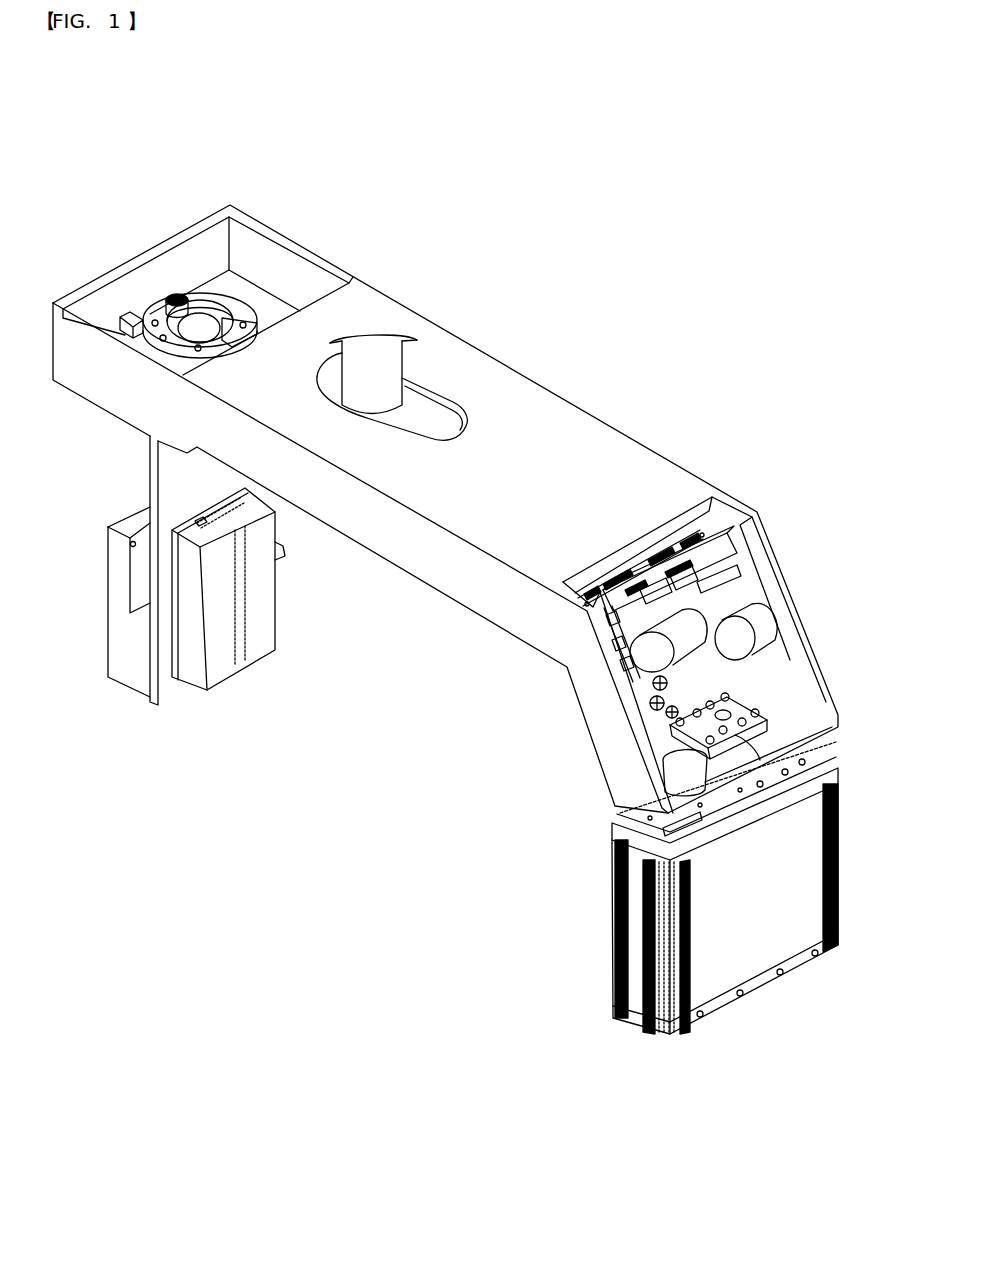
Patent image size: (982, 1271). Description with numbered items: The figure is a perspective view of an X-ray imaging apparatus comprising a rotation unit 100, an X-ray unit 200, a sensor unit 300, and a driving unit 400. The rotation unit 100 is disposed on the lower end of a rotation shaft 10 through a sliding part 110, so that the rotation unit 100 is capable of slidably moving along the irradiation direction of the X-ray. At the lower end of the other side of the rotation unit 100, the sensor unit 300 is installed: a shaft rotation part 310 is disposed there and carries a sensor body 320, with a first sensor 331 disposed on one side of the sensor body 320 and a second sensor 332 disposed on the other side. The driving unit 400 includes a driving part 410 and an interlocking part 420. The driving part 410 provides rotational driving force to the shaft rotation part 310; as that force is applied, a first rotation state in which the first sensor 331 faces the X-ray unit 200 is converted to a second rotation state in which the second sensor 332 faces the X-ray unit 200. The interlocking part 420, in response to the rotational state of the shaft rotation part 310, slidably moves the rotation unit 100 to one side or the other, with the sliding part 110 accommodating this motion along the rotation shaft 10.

The rotation shaft 10 is at (390, 358).
The rotation unit 100 is at (625, 473).
The sliding part 110 is at (420, 415).
The X-ray unit 200 is at (747, 947).
The sensor unit 300 is at (166, 546).
The shaft rotation part 310 is at (158, 300).
The sensor body 320 is at (155, 467).
The first sensor 331 is at (232, 617).
The second sensor 332 is at (125, 627).
The driving unit 400 is at (306, 229).
The driving part 410 is at (187, 343).
The interlocking part 420 is at (245, 314).